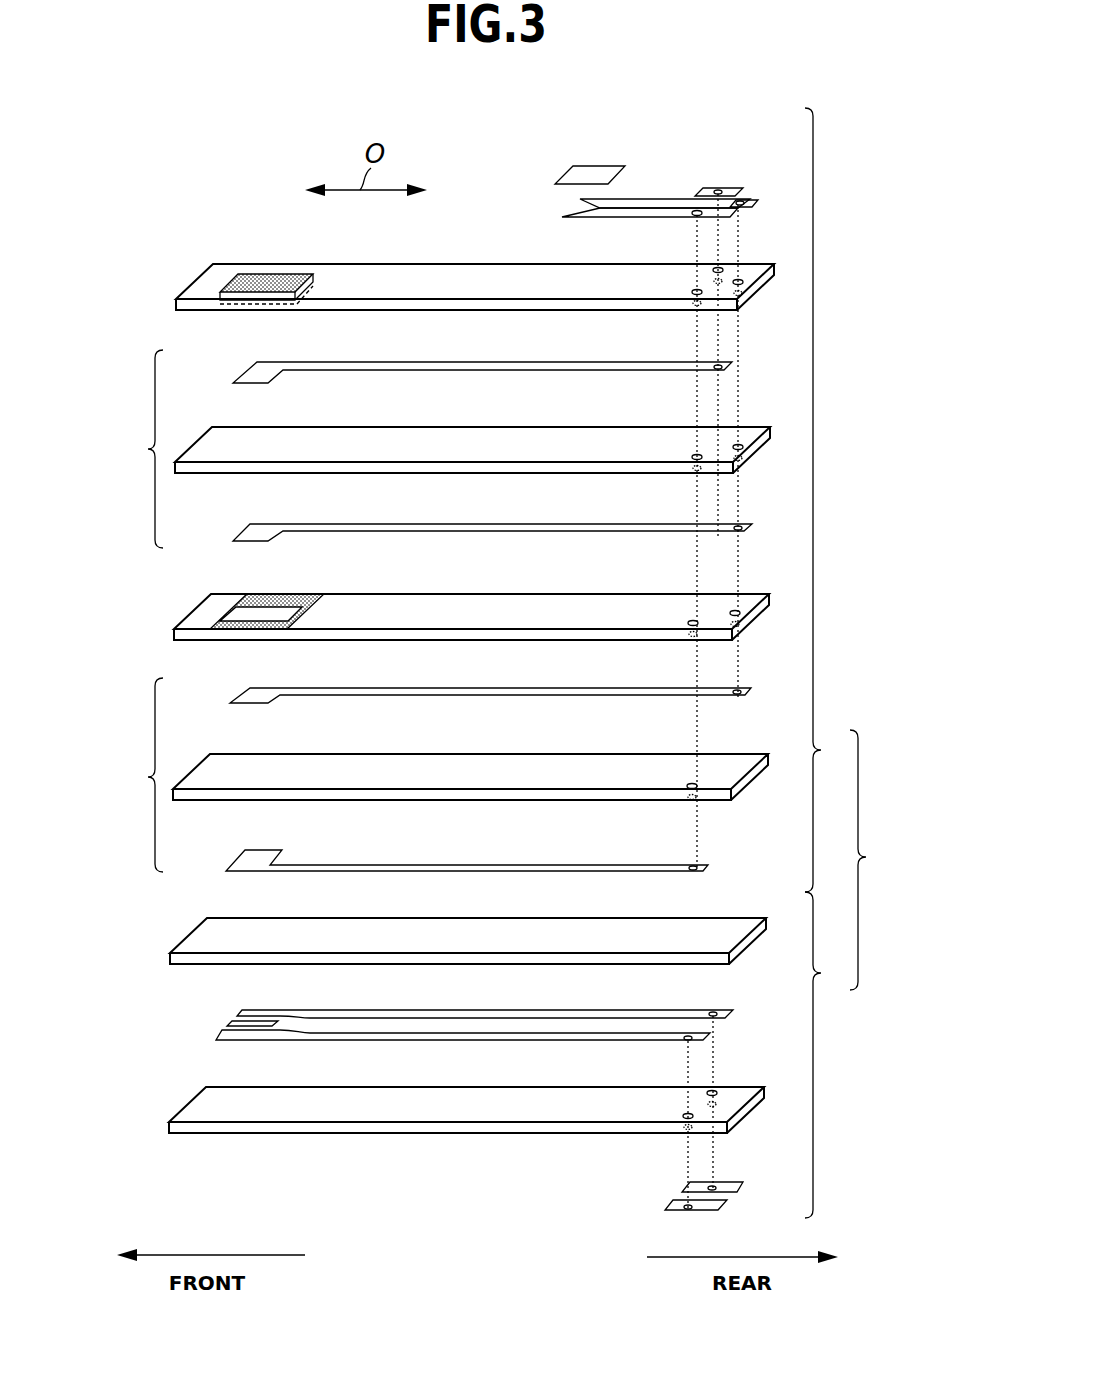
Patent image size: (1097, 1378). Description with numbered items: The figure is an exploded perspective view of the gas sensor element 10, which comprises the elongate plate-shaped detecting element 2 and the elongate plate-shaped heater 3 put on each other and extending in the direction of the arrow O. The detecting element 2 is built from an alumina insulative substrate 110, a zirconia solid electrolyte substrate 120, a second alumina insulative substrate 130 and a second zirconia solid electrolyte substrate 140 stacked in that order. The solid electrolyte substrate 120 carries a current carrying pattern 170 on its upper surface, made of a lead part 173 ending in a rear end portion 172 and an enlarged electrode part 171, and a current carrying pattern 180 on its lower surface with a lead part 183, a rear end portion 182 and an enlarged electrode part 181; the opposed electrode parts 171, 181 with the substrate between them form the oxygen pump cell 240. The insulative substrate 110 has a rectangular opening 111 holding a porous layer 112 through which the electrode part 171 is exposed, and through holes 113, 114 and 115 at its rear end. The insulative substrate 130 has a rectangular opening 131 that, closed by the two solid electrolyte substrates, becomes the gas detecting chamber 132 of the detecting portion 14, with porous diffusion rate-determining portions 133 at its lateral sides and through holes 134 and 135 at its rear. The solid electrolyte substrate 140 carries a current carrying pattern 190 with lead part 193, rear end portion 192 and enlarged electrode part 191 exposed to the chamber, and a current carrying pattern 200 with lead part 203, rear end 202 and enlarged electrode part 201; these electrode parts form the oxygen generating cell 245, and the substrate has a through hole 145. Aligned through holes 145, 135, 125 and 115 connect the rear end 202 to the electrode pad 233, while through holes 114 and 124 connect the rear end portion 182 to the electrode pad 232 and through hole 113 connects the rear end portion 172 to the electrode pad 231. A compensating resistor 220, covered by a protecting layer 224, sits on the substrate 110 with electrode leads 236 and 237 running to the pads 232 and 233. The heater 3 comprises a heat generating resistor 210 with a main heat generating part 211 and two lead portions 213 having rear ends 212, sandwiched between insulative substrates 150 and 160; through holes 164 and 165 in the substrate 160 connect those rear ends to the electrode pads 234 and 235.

The detecting element 2 is at (825, 500).
The heater 3 is at (825, 1055).
The sensor element 10 is at (878, 860).
The detecting portion 14 is at (480, 567).
The insulative substrate 110 is at (490, 257).
The rectangular opening 111 is at (300, 294).
The porous layer 112 is at (258, 287).
The through hole 113 is at (722, 268).
The through hole 114 is at (740, 281).
The through hole 115 is at (692, 290).
The solid electrolyte substrate 120 is at (488, 425).
The through hole 124 is at (740, 445).
The through hole 125 is at (692, 455).
The insulative substrate 130 is at (488, 590).
The rectangular opening 131 is at (304, 585).
The gas detecting chamber 132 is at (284, 607).
The diffusion rate-determining portion 133 is at (255, 612).
The through hole 134 is at (737, 611).
The through hole 135 is at (688, 621).
The solid electrolyte substrate 140 is at (470, 752).
The through hole 145 is at (687, 784).
The insulative substrate 150 is at (460, 938).
The insulative substrate 160 is at (469, 1083).
The through hole 164 is at (714, 1091).
The through hole 165 is at (683, 1115).
The current carrying pattern 170 is at (482, 351).
The enlarged electrode part 171 is at (258, 378).
The rear end portion 172 is at (690, 357).
The lead part 173 is at (428, 368).
The current carrying pattern 180 is at (492, 511).
The enlarged electrode part 181 is at (258, 537).
The rear end portion 182 is at (690, 520).
The lead part 183 is at (423, 530).
The current carrying pattern 190 is at (490, 673).
The enlarged electrode part 191 is at (258, 698).
The rear end portion 192 is at (690, 684).
The lead part 193 is at (423, 691).
The current carrying pattern 200 is at (467, 840).
The enlarged electrode part 201 is at (262, 862).
The rear end 202 is at (690, 860).
The lead part 203 is at (423, 867).
The heat generating resistor 210 is at (474, 1004).
The main heat generating part 211 is at (258, 1012).
The rear ends 212 is at (680, 1028).
The lead portions 213 is at (424, 1032).
The compensating resistor 220 is at (614, 191).
The protecting layer 224 is at (575, 180).
The electrode pad 231 is at (737, 189).
The electrode pad 232 is at (755, 201).
The electrode pad 233 is at (695, 210).
The electrode pad 234 is at (722, 1188).
The electrode pad 235 is at (718, 1208).
The electrode lead 236 is at (642, 203).
The electrode lead 237 is at (622, 216).
The oxygen pump cell 240 is at (128, 449).
The oxygen generating cell 245 is at (128, 775).